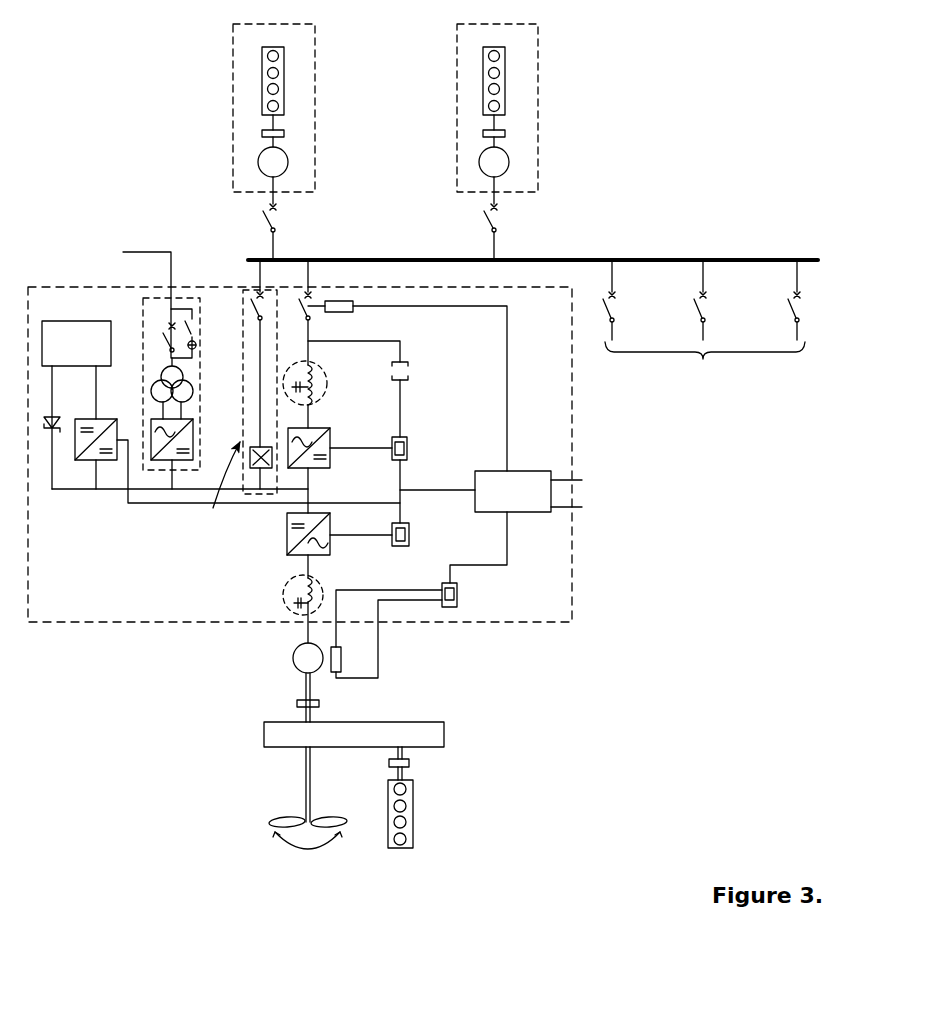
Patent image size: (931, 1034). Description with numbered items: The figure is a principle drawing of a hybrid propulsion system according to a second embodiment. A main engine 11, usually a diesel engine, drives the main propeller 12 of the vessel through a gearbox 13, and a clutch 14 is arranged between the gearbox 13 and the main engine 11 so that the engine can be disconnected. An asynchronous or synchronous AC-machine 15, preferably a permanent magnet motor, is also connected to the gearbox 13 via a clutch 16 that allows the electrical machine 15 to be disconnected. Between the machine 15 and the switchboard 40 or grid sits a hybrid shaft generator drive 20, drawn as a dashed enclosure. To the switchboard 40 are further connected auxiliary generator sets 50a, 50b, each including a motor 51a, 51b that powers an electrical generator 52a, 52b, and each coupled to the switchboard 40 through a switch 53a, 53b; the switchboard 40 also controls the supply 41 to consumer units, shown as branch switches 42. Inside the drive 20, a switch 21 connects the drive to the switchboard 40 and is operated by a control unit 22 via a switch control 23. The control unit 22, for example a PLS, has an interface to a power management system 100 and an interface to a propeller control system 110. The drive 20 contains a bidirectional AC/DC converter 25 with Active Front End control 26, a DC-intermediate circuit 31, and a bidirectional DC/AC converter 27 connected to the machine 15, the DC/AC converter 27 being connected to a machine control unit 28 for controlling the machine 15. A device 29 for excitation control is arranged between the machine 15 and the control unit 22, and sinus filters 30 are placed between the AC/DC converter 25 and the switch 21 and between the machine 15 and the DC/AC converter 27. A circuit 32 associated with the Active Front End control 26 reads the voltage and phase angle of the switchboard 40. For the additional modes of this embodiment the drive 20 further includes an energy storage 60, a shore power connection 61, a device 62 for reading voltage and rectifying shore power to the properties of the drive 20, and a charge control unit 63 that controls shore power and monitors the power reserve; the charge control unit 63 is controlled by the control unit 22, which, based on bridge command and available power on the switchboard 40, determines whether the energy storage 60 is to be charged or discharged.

The main engine 11 is at (406, 812).
The main propeller 12 is at (305, 820).
The gearbox 13 is at (390, 735).
The clutch 14 is at (406, 763).
The AC-machine 15 is at (305, 656).
The clutch 16 is at (322, 703).
The hybrid shaft generator drive 20 is at (500, 630).
The switch 21 is at (292, 298).
The control unit 22 is at (512, 490).
The switch control 23 is at (341, 306).
The bidirectional AC/DC converter 25 is at (318, 455).
The Active Front End control 26 is at (409, 447).
The bidirectional DC/AC converter 27 is at (290, 528).
The machine control unit 28 is at (410, 530).
The device for excitation control 29 is at (458, 592).
The sinus filter 30 is at (331, 388).
The DC-intermediate circuit 31 is at (312, 493).
The circuit for reading voltage and phase angle 32 is at (401, 371).
The switchboard 40 is at (750, 256).
The supply to consumer units 41 is at (704, 322).
The consumer switch 42 is at (690, 308).
The auxiliary generator set 50a is at (319, 112).
The auxiliary generator set 50b is at (544, 112).
The motor 51a is at (276, 76).
The motor 51b is at (497, 80).
The electrical generator 52a is at (280, 162).
The electrical generator 52b is at (500, 162).
The switch 53a is at (283, 216).
The switch 53b is at (504, 216).
The energy storage 60 is at (76, 330).
The shore power connection 61 is at (130, 273).
The device for reading voltage and rectifying of shore power 62 is at (182, 295).
The charge control unit 63 is at (92, 458).
The power management system 100 is at (589, 480).
The propeller control system 110 is at (589, 507).